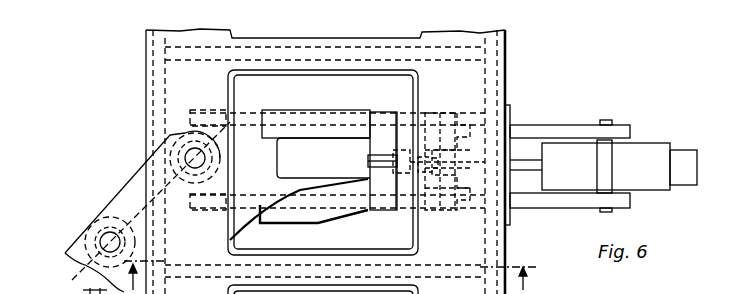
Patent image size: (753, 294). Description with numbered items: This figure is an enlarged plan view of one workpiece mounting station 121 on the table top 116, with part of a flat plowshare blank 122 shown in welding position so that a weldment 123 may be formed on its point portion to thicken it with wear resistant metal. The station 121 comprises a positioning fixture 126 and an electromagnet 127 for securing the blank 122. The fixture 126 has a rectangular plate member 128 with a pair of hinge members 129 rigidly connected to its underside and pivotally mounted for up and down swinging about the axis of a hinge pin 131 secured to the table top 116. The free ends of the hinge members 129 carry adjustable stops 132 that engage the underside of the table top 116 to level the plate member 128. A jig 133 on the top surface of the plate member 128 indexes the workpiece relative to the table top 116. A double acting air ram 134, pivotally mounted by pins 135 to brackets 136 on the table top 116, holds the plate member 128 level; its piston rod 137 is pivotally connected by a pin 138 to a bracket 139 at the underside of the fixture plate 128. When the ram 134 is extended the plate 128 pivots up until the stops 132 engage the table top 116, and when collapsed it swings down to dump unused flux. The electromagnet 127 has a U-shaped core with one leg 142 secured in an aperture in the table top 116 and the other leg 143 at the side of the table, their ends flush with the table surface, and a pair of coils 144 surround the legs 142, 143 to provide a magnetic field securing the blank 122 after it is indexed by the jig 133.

The table top 116 is at (560, 58).
The workpiece mounting station 121 is at (290, 103).
The plowshare blank 122 is at (136, 176).
The weldment 123 is at (310, 136).
The positioning fixture 126 is at (390, 240).
The electromagnet 127 is at (127, 202).
The plate member 128 is at (419, 245).
The hinge member 129 is at (355, 116).
The hinge pin 131 is at (446, 115).
The adjustable stop 132 is at (230, 104).
The jig 133 is at (302, 221).
The double acting air ram 134 is at (652, 147).
The pin 135 is at (607, 121).
The bracket 136 is at (568, 126).
The piston rod 137 is at (520, 152).
The pin 138 is at (410, 176).
The bracket 139 is at (368, 160).
The leg 142 is at (212, 158).
The leg 143 is at (82, 263).
The coil 144 is at (86, 235).